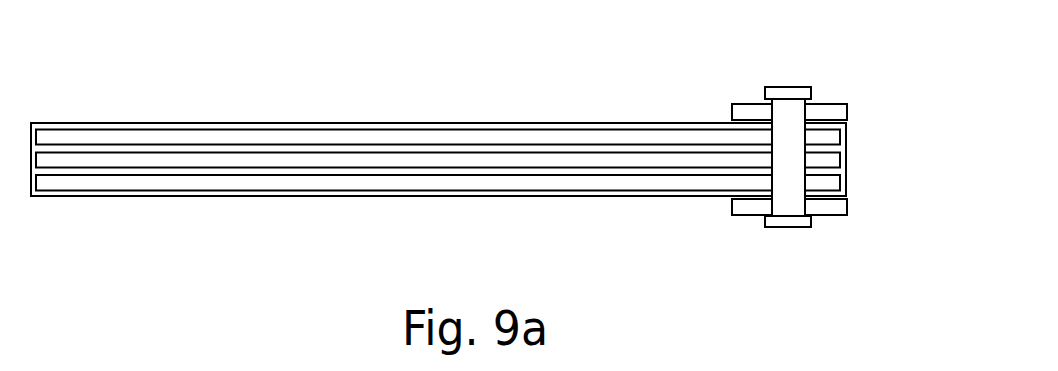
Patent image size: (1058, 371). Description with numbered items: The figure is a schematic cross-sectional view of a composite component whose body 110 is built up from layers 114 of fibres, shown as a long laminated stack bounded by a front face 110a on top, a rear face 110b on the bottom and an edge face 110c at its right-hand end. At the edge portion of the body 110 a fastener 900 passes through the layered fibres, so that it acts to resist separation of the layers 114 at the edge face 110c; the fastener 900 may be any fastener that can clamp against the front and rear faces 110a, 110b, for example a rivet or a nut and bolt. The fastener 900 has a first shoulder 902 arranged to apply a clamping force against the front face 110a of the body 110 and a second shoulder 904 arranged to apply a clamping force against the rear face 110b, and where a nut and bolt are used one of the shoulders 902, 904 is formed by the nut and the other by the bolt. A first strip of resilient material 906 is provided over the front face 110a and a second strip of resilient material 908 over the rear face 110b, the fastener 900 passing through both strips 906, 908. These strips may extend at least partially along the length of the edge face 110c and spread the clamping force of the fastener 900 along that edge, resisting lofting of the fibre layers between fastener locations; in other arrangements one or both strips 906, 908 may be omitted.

The body 110 is at (338, 124).
The front face 110a is at (422, 124).
The rear face 110b is at (312, 197).
The edge face 110c is at (846, 160).
The layers 114 is at (565, 135).
The fastener 900 is at (790, 92).
The first shoulder 902 is at (812, 103).
The second shoulder 904 is at (815, 215).
The first strip of resilient material 906 is at (740, 108).
The second strip of resilient material 908 is at (740, 208).